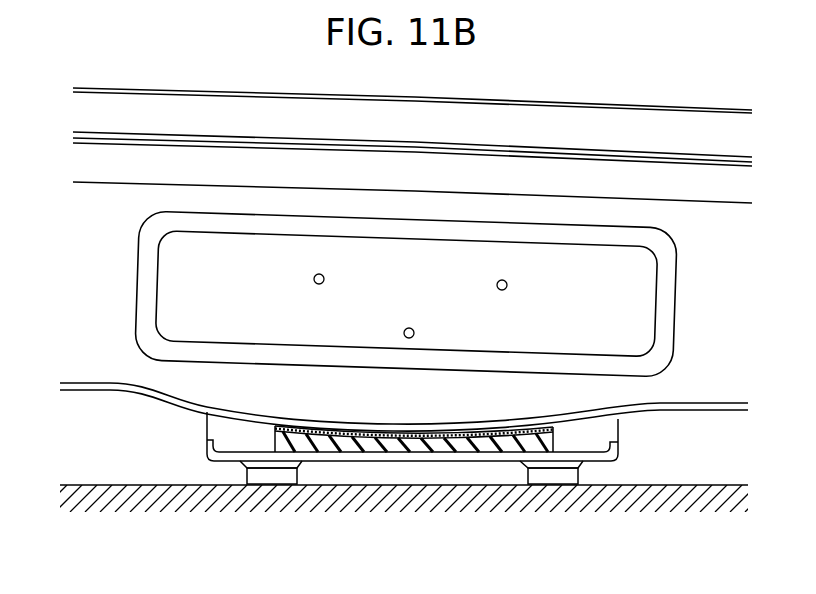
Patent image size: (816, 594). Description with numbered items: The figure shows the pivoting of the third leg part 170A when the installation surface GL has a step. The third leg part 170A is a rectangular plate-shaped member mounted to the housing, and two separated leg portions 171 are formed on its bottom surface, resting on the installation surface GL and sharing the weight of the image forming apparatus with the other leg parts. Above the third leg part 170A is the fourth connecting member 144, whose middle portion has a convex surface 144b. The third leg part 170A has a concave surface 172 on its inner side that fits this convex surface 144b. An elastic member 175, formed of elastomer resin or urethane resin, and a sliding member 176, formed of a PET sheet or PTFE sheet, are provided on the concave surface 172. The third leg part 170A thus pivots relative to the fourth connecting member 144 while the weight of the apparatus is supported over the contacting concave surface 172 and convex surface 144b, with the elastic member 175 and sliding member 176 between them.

The fourth connecting member 144 is at (107, 250).
The convex surface 144b is at (386, 412).
The third leg part 170A is at (593, 432).
The leg portion 171 is at (272, 475).
The concave surface 172 is at (467, 452).
The elastic member 175 is at (398, 448).
The sliding member 176 is at (451, 427).
The installation surface GL is at (172, 474).